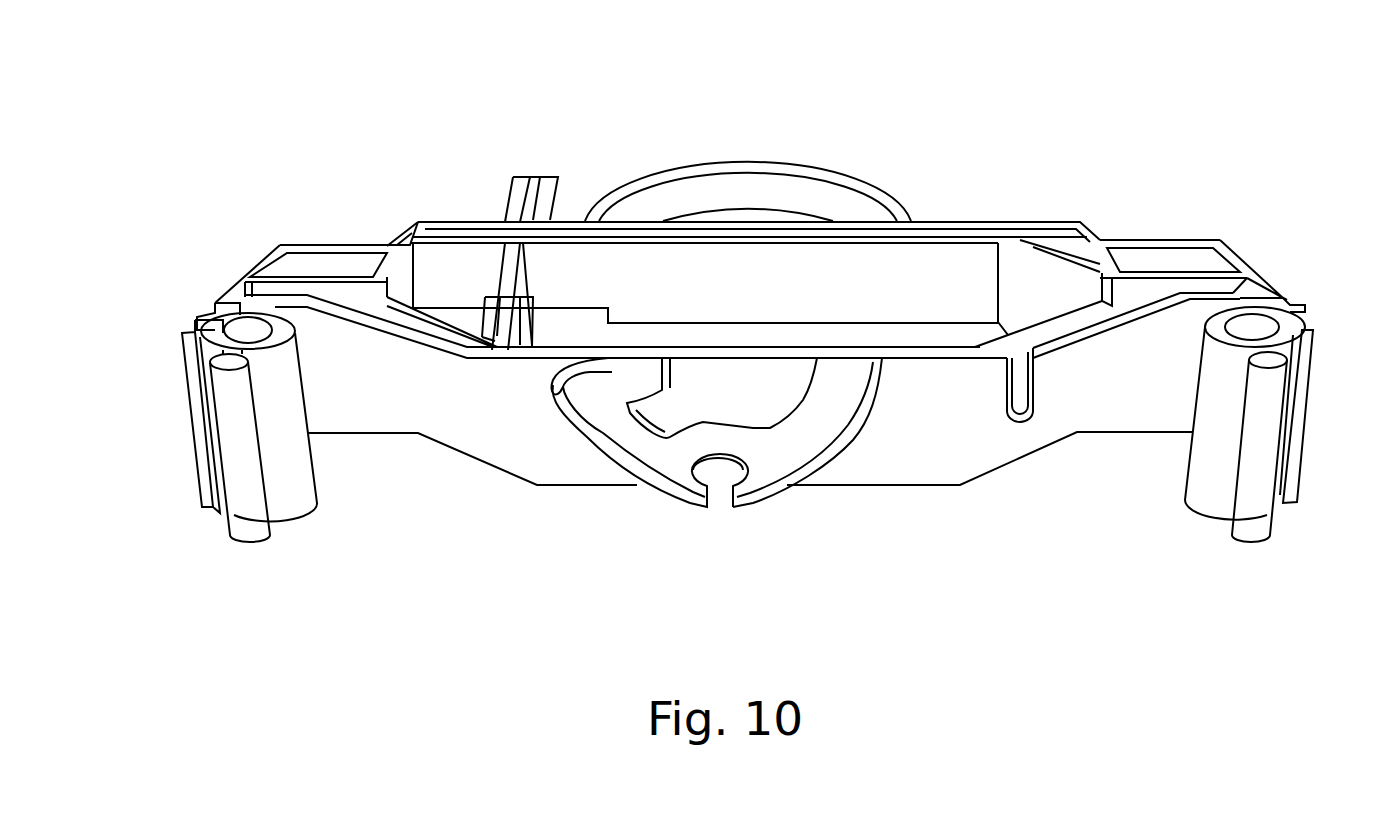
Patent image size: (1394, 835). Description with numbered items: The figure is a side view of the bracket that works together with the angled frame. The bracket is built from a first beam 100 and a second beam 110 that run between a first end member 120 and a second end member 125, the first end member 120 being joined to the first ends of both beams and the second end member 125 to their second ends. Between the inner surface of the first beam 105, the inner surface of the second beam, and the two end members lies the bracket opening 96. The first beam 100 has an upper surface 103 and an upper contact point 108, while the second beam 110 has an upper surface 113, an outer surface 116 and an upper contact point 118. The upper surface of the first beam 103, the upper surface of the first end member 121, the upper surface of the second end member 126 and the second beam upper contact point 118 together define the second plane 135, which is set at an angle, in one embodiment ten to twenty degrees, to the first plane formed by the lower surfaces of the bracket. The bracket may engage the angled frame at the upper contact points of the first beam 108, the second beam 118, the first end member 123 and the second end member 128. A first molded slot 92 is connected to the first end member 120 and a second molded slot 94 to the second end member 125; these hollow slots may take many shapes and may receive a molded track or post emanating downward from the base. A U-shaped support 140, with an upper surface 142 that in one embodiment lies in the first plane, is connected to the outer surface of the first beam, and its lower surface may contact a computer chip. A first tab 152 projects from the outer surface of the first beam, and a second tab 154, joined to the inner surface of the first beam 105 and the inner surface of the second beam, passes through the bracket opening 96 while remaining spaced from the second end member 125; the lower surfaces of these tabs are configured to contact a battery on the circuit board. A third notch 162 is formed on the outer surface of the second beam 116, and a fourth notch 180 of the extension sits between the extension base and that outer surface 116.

The first molded slot 92 is at (243, 330).
The second molded slot 94 is at (1258, 328).
The bracket opening 96 is at (1087, 232).
The first beam 100 is at (918, 257).
The upper surface of the first beam 103 is at (583, 221).
The inner surface of the first beam 105 is at (953, 258).
The upper contact point of the first beam 108 is at (973, 340).
The second beam 110 is at (830, 473).
The upper surface of the second beam 113 is at (895, 330).
The outer surface of the second beam 116 is at (882, 468).
The upper contact point of the second beam 118 is at (498, 353).
The first end member 120 is at (1222, 242).
The upper surface of the first end member 121 is at (1250, 270).
The upper contact point of the first end member 123 is at (1273, 297).
The second end member 125 is at (262, 262).
The upper surface of the second end member 126 is at (291, 244).
The upper contact point of the second end member 128 is at (213, 318).
The second plane 135 is at (737, 165).
The U-shaped support 140 is at (668, 172).
The upper surface of the U-shaped support 142 is at (810, 170).
The first tab 152 is at (517, 207).
The second tab 154 is at (525, 330).
The third notch 162 is at (1033, 400).
The fourth notch 180 is at (580, 361).